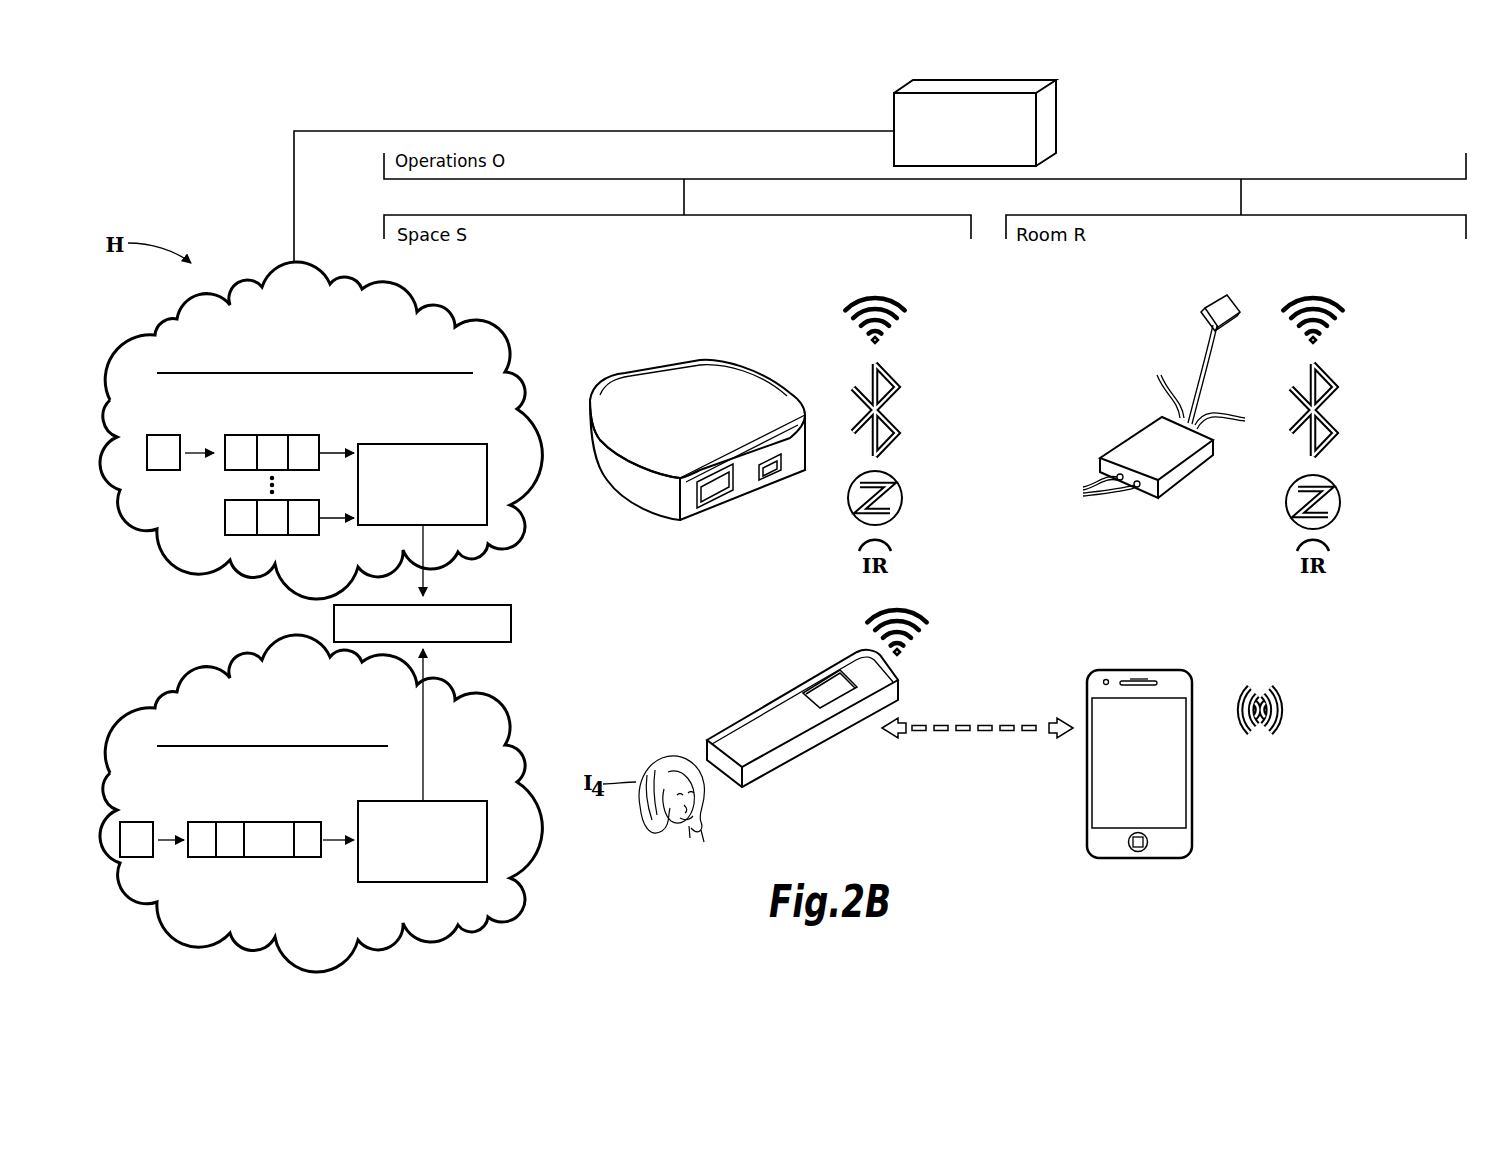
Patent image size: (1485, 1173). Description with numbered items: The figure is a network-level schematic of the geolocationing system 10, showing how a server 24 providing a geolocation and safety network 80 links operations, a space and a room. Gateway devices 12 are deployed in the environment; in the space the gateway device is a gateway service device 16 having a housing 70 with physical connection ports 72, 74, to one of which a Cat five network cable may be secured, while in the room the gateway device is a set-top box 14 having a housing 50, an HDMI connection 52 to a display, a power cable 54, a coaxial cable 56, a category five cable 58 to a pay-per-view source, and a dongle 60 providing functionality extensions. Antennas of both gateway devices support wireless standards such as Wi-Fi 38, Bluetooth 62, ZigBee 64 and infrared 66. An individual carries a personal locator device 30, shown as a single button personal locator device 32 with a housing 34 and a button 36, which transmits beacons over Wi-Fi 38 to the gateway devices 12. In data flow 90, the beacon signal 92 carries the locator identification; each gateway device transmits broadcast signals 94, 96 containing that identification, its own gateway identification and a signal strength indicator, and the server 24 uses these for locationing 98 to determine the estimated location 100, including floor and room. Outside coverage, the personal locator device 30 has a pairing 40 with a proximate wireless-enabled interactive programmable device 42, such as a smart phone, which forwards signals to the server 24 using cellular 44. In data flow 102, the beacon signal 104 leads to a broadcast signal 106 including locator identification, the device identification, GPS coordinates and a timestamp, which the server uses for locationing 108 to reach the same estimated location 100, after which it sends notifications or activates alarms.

The geolocationing system 10 is at (1283, 150).
The gateway device 12 is at (917, 406).
The set-top box 14 is at (1156, 415).
The gateway service device 16 is at (697, 408).
The server 24 is at (1050, 123).
The personal locator device 30 is at (874, 732).
The single button personal locator device 32 is at (796, 773).
The housing 34 is at (840, 727).
The button 36 is at (817, 675).
The Wi-Fi 38 is at (905, 322).
The pairing 40 is at (1001, 720).
The proximate wireless-enabled interactive programmable device 42 is at (1198, 797).
The cellular 44 is at (1295, 708).
The housing 50 is at (1147, 437).
The HDMI connection 52 is at (1108, 497).
The power cable 54 is at (1085, 497).
The coaxial cable 56 is at (1163, 380).
The category five cable 58 is at (1222, 413).
The dongle 60 is at (1222, 296).
The Bluetooth 62 is at (900, 405).
The ZigBee 64 is at (902, 500).
The infrared 66 is at (890, 568).
The housing 70 is at (637, 372).
The physical connection port 72 is at (712, 470).
The physical connection port 74 is at (776, 478).
The geolocation and safety network 80 is at (508, 340).
The data flow 90 is at (317, 459).
The beacon signal 92 is at (167, 434).
The broadcast signal 94 is at (271, 434).
The broadcast signal 96 is at (225, 521).
The locationing 98 is at (428, 443).
The estimated location 100 is at (511, 624).
The data flow 102 is at (304, 809).
The beacon signal 104 is at (140, 821).
The broadcast signal 106 is at (257, 821).
The locationing 108 is at (460, 800).